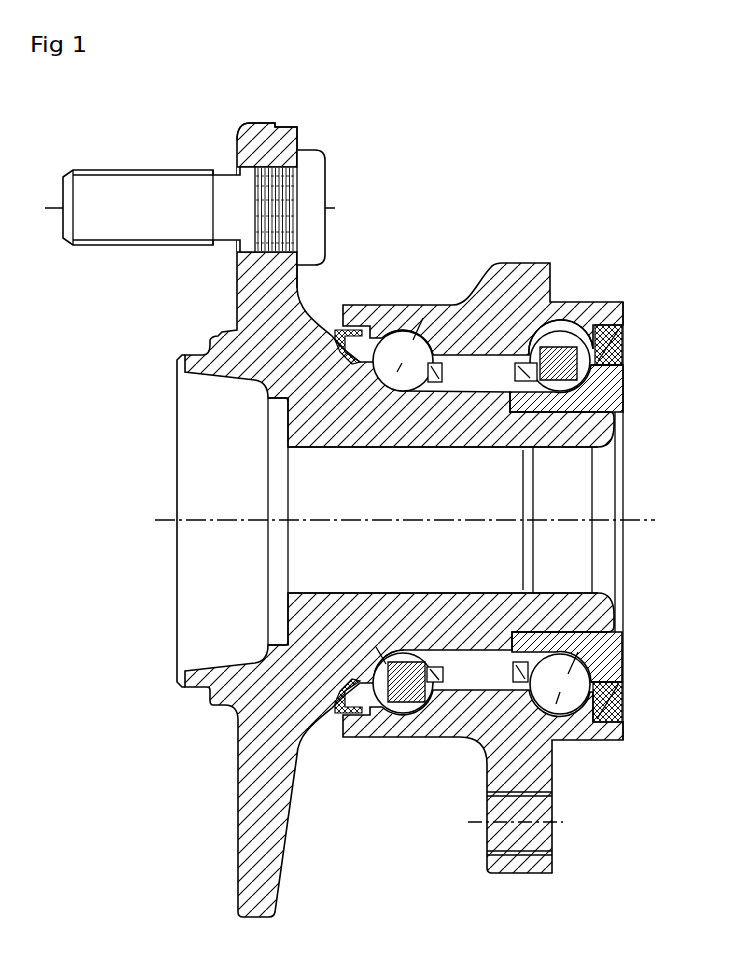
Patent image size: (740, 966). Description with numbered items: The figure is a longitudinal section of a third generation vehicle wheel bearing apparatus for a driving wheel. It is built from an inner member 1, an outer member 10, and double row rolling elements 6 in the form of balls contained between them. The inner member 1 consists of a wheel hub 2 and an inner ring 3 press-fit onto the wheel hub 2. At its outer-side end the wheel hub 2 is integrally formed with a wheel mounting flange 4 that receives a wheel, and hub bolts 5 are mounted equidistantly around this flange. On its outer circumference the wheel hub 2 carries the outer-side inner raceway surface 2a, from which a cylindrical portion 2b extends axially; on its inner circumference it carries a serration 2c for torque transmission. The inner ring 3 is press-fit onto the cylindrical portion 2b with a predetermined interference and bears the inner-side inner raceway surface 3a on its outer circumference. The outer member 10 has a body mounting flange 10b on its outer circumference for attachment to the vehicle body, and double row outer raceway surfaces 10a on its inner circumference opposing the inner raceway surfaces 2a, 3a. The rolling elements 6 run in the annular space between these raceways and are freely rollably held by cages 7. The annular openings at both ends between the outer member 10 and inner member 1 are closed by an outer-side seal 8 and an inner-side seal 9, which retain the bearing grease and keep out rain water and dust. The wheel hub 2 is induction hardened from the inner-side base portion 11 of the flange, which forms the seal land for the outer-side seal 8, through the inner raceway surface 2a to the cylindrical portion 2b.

The inner member 1 is at (280, 455).
The wheel hub 2 is at (330, 410).
The inner raceway surface 2a is at (352, 368).
The cylindrical portion 2b is at (572, 415).
The serration 2c is at (418, 465).
The inner ring 3 is at (606, 393).
The inner raceway surface 3a is at (596, 367).
The wheel mounting flange 4 is at (257, 138).
The hub bolts 5 is at (92, 185).
The rolling elements 6 is at (545, 698).
The cages 7 is at (508, 400).
The outer-side seal 8 is at (343, 710).
The inner-side seal 9 is at (620, 699).
The outer member 10 is at (452, 300).
The outer raceway surfaces 10a is at (395, 330).
The body mounting flange 10b is at (520, 873).
The inner-side base portion 11 is at (345, 333).